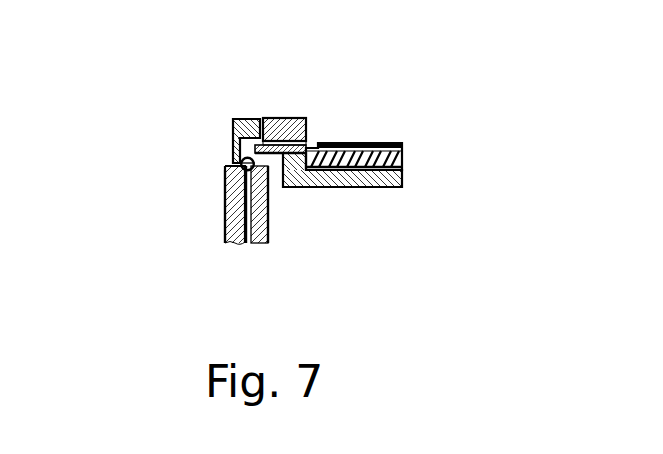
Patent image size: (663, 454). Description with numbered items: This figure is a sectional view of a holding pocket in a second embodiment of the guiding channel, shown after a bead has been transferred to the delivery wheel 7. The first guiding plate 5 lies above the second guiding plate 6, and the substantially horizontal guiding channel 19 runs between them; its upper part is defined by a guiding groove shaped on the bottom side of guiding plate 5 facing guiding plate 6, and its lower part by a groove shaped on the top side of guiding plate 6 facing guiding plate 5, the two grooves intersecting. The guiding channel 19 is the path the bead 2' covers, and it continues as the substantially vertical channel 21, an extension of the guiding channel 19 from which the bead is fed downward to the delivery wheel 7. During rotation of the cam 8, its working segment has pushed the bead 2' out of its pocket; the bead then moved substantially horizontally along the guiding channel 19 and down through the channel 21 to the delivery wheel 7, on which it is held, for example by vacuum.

The first guiding plate 5 is at (287, 120).
The second guiding plate 6 is at (234, 119).
The delivery wheel 7 is at (232, 210).
The cam 8 is at (387, 147).
The guiding channel 19 is at (283, 150).
The channel 21 is at (245, 153).
The bead 2' is at (168, 206).